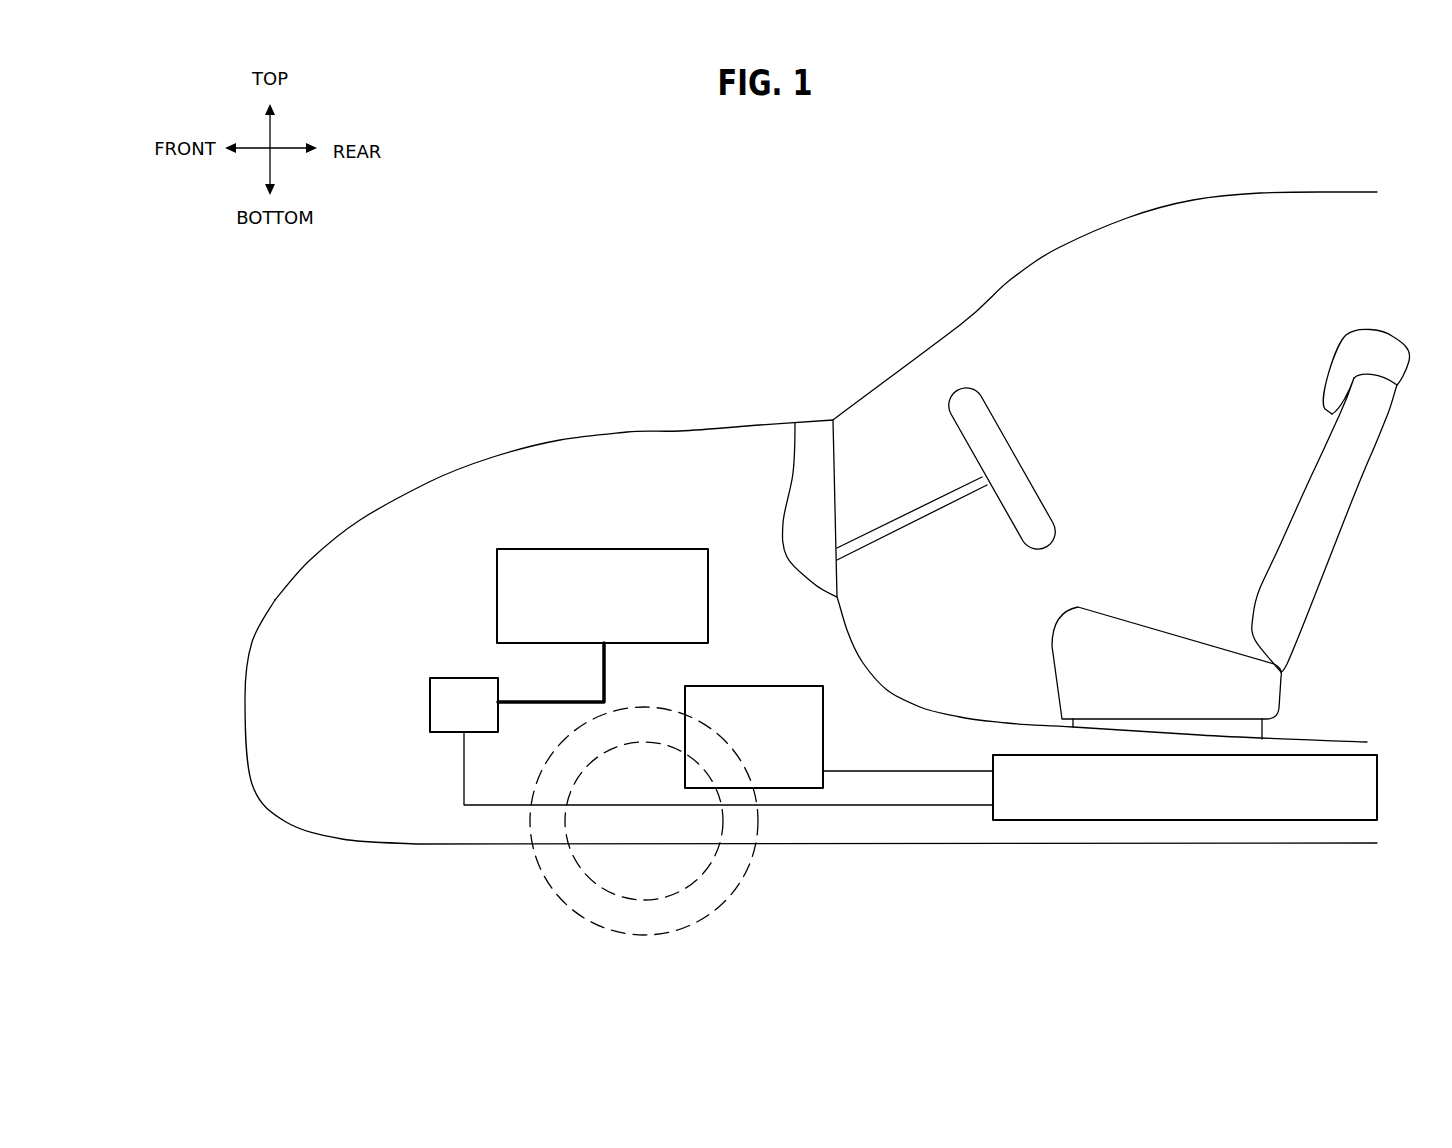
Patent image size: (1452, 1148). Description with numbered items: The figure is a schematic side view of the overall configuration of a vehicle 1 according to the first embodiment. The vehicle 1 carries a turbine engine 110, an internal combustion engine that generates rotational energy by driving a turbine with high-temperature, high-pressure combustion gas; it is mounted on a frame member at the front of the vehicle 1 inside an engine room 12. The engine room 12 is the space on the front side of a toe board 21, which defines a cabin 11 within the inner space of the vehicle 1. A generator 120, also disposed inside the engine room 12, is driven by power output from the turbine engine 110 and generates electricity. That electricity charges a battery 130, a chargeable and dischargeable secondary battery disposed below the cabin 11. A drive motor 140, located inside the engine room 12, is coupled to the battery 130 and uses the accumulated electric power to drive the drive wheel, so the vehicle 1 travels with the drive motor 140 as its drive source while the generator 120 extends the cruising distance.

The vehicle 1 is at (430, 206).
The cabin 11 is at (1125, 250).
The engine room 12 is at (680, 443).
The toe board 21 is at (795, 423).
The turbine engine 110 is at (605, 548).
The generator 120 is at (464, 678).
The battery 130 is at (1207, 822).
The drive motor 140 is at (750, 685).